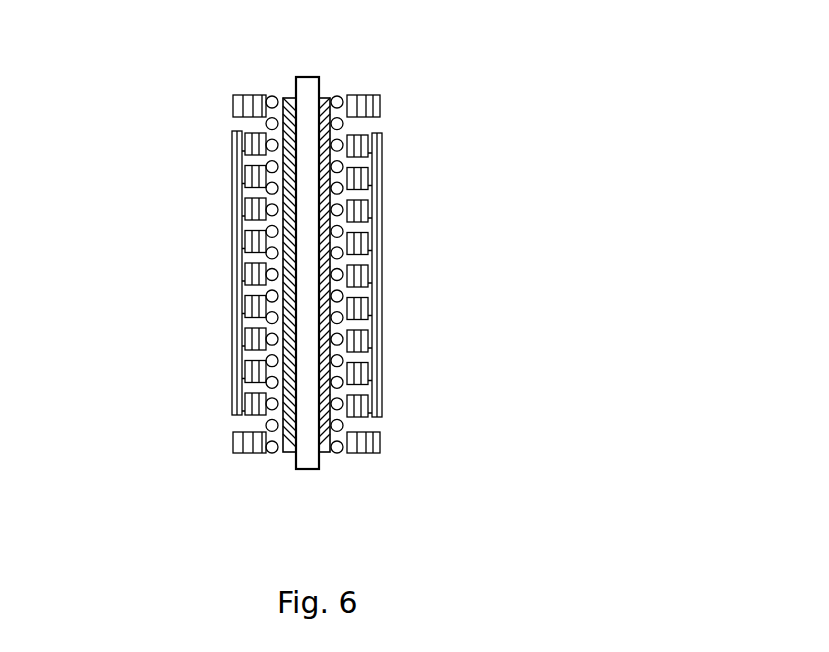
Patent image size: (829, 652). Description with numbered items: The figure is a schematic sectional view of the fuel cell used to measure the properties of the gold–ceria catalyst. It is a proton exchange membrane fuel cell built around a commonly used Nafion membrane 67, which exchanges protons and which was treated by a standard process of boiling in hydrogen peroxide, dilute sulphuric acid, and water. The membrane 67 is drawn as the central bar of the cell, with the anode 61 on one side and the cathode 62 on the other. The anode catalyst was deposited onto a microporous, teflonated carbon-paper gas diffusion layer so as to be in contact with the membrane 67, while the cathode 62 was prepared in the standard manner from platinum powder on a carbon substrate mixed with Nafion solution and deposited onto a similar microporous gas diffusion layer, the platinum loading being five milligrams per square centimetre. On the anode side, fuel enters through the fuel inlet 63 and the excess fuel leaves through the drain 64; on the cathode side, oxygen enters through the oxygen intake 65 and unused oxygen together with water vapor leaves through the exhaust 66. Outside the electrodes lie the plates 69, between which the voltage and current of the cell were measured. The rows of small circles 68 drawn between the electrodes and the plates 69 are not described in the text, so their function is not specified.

The anode 61 is at (290, 452).
The cathode 62 is at (322, 453).
The fuel inlet 63 is at (220, 123).
The drain of the excess fuel 64 is at (388, 127).
The oxygen intake 65 is at (217, 433).
The exhaust 66 is at (385, 428).
The Nafion membrane 67 is at (310, 478).
The solder balls 68 is at (280, 92).
The plates 69 is at (217, 323).